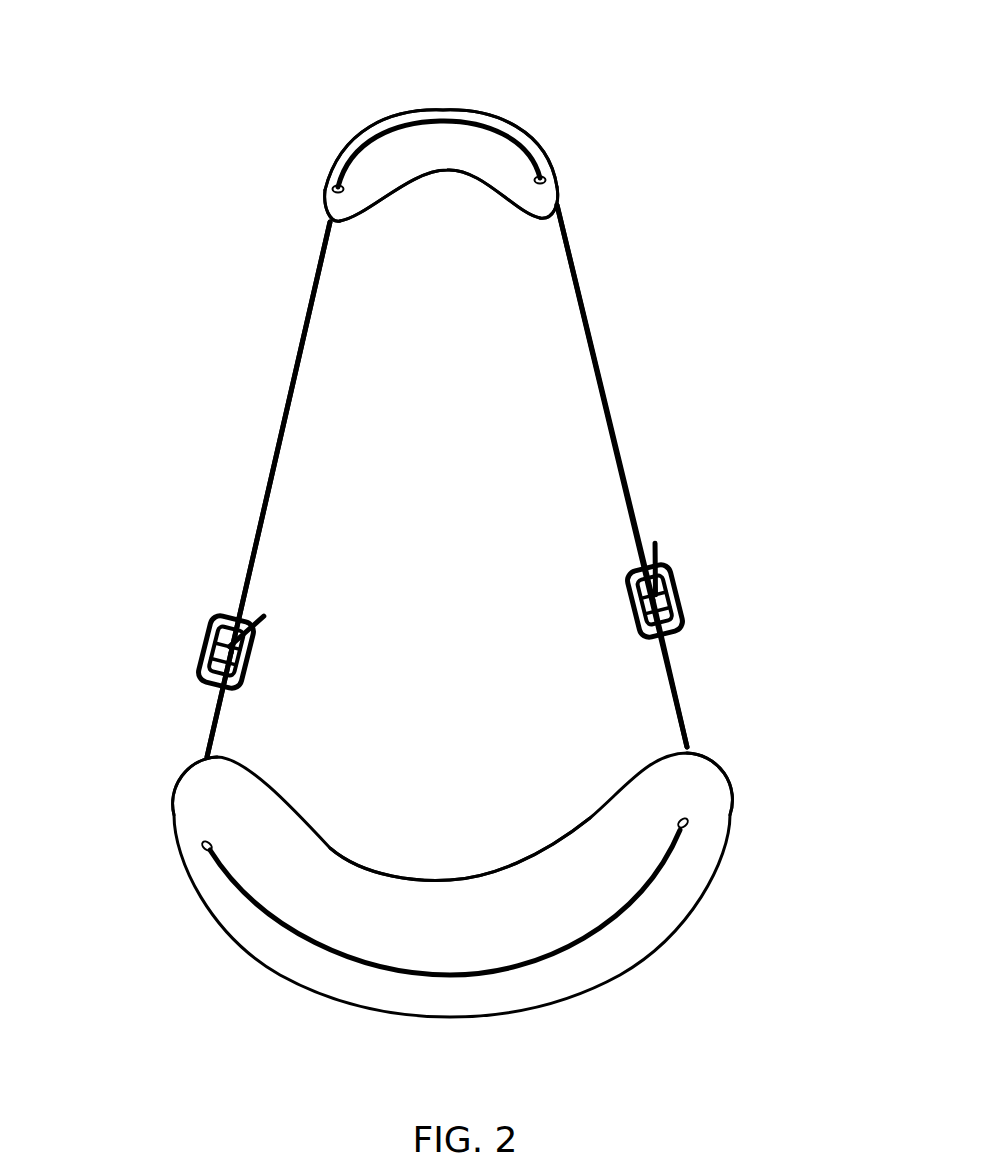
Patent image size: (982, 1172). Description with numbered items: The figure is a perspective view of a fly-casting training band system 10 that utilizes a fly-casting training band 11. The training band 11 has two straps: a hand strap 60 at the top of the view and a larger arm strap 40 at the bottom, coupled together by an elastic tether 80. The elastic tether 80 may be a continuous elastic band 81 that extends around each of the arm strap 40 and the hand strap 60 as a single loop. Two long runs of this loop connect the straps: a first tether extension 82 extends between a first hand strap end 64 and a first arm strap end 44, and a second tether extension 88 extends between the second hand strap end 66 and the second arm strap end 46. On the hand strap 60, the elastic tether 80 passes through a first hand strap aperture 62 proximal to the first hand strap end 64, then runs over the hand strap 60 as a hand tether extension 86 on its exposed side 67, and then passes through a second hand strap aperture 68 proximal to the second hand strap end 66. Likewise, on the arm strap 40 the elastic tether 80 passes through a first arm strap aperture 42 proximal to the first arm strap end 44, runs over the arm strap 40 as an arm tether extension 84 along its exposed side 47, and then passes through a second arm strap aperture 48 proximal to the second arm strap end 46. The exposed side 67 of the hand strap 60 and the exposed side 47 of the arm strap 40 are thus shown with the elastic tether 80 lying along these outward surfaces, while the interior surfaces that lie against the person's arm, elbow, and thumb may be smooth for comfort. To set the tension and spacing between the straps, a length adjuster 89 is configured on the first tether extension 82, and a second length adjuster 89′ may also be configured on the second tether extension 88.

The fly-casting training band system 10 is at (185, 152).
The fly-casting training band 11 is at (426, 135).
The arm strap 40 is at (415, 895).
The first arm strap aperture 42 is at (207, 842).
The first arm strap end 44 is at (192, 790).
The second arm strap end 46 is at (703, 772).
The exposed side of the arm strap 47 is at (487, 898).
The second arm strap aperture 48 is at (690, 818).
The hand strap 60 is at (488, 135).
The first hand strap aperture 62 is at (330, 187).
The first hand strap end 64 is at (325, 200).
The second hand strap end 66 is at (558, 180).
The exposed side of the hand strap 67 is at (458, 142).
The second hand strap aperture 68 is at (552, 167).
The elastic tether 80 is at (257, 540).
The elastic band 81 is at (615, 440).
The first tether extension 82 is at (283, 425).
The arm tether extension 84 is at (312, 955).
The hand tether extension 86 is at (350, 143).
The second tether extension 88 is at (594, 355).
The length adjuster 89 is at (208, 633).
The second length adjuster 89′ is at (675, 568).